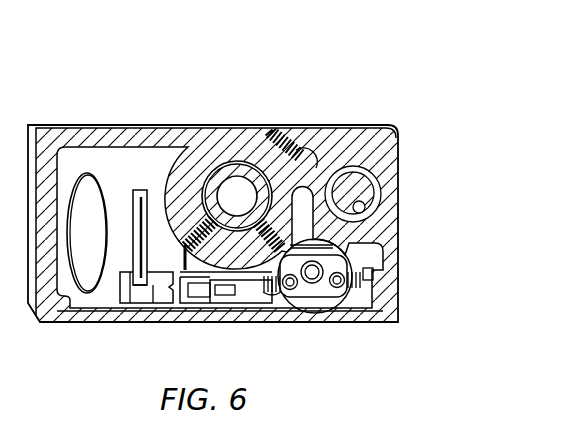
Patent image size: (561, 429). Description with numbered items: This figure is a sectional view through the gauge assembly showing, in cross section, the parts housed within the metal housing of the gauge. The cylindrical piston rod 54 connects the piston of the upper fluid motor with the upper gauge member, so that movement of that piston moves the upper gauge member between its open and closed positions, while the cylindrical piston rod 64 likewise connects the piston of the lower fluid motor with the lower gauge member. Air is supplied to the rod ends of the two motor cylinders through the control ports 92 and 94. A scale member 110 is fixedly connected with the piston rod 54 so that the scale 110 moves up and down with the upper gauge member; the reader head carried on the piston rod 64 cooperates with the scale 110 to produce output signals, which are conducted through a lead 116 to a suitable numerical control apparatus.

The cylindrical piston rod 54 is at (362, 210).
The cylindrical piston rod 64 is at (231, 167).
The control port 92 is at (184, 276).
The control port 94 is at (320, 166).
The scale member 110 is at (137, 188).
The lead 116 is at (92, 173).